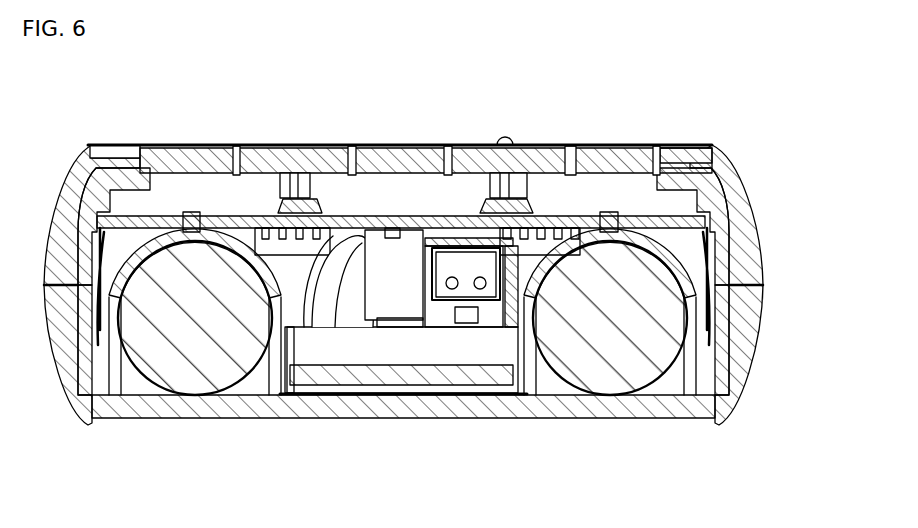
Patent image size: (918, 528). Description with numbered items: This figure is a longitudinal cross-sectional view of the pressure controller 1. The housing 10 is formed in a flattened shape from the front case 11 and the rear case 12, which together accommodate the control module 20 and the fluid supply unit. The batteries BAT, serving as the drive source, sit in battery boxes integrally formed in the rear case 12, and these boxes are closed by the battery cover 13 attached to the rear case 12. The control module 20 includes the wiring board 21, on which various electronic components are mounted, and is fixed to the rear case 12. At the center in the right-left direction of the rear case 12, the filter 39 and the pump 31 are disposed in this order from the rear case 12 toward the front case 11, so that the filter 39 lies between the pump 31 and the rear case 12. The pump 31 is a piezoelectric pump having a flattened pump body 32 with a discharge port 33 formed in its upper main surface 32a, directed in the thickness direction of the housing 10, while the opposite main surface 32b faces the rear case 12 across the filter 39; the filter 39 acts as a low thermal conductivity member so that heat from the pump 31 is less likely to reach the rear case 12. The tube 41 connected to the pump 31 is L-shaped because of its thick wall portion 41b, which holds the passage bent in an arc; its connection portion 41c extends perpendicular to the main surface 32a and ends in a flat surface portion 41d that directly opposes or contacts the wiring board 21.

The pressure controller 1 is at (761, 131).
The housing 10 is at (449, 285).
The front case 11 is at (756, 260).
The rear case 12 is at (756, 308).
The battery cover 13 is at (700, 420).
The control module 20 is at (590, 190).
The wiring board 21 is at (333, 213).
The pump 31 is at (432, 402).
The pump body 32 is at (422, 371).
The main surface 32a is at (321, 332).
The main surface 32b is at (495, 360).
The discharge port 33 is at (390, 327).
The filter 39 is at (292, 385).
The tube 41 is at (408, 293).
The thick wall portion 41b is at (420, 237).
The connection portion 41c is at (440, 284).
The flat surface portion 41d is at (392, 228).
The batteries BAT is at (166, 383).